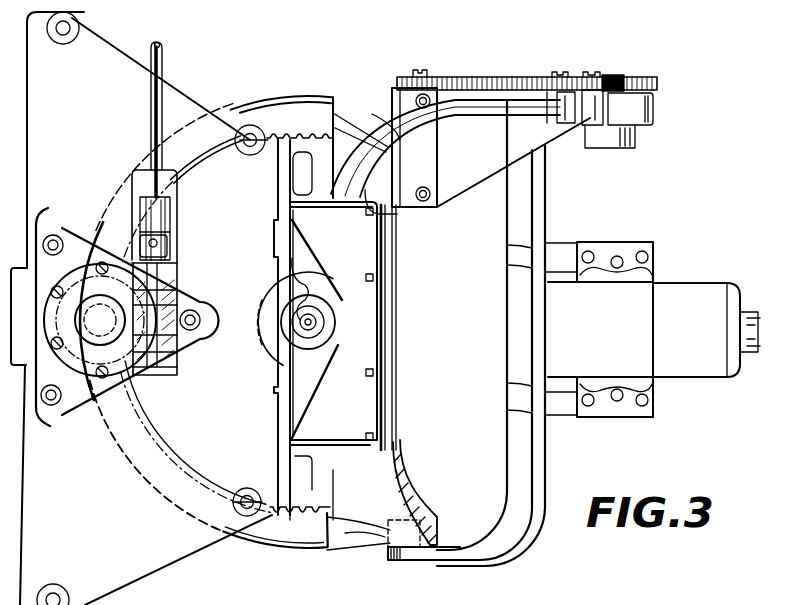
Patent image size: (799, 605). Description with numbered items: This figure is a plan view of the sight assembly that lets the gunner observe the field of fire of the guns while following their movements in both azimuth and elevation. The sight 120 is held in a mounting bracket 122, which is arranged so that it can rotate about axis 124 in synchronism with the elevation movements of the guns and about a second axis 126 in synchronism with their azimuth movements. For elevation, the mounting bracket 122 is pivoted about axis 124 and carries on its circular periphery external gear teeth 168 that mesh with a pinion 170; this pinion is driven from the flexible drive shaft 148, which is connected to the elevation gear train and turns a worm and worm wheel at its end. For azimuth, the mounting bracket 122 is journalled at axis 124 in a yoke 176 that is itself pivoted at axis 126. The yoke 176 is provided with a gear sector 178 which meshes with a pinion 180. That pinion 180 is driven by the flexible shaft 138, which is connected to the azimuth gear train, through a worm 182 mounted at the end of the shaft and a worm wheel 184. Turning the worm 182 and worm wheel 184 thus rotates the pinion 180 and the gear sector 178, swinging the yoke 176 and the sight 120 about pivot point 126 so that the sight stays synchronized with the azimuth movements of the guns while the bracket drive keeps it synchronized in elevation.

The sight 120 is at (735, 256).
The mounting bracket 122 is at (513, 548).
The axis 124 is at (412, 562).
The second axis 126 is at (300, 334).
The flexible shaft 138 is at (164, 54).
The flexible drive shaft 148 is at (492, 115).
The external gear teeth 168 is at (660, 84).
The pinion 170 is at (616, 74).
The yoke 176 is at (396, 374).
The gear sector 178 is at (302, 505).
The pinion 180 is at (75, 393).
The worm 182 is at (182, 302).
The worm wheel 184 is at (150, 398).